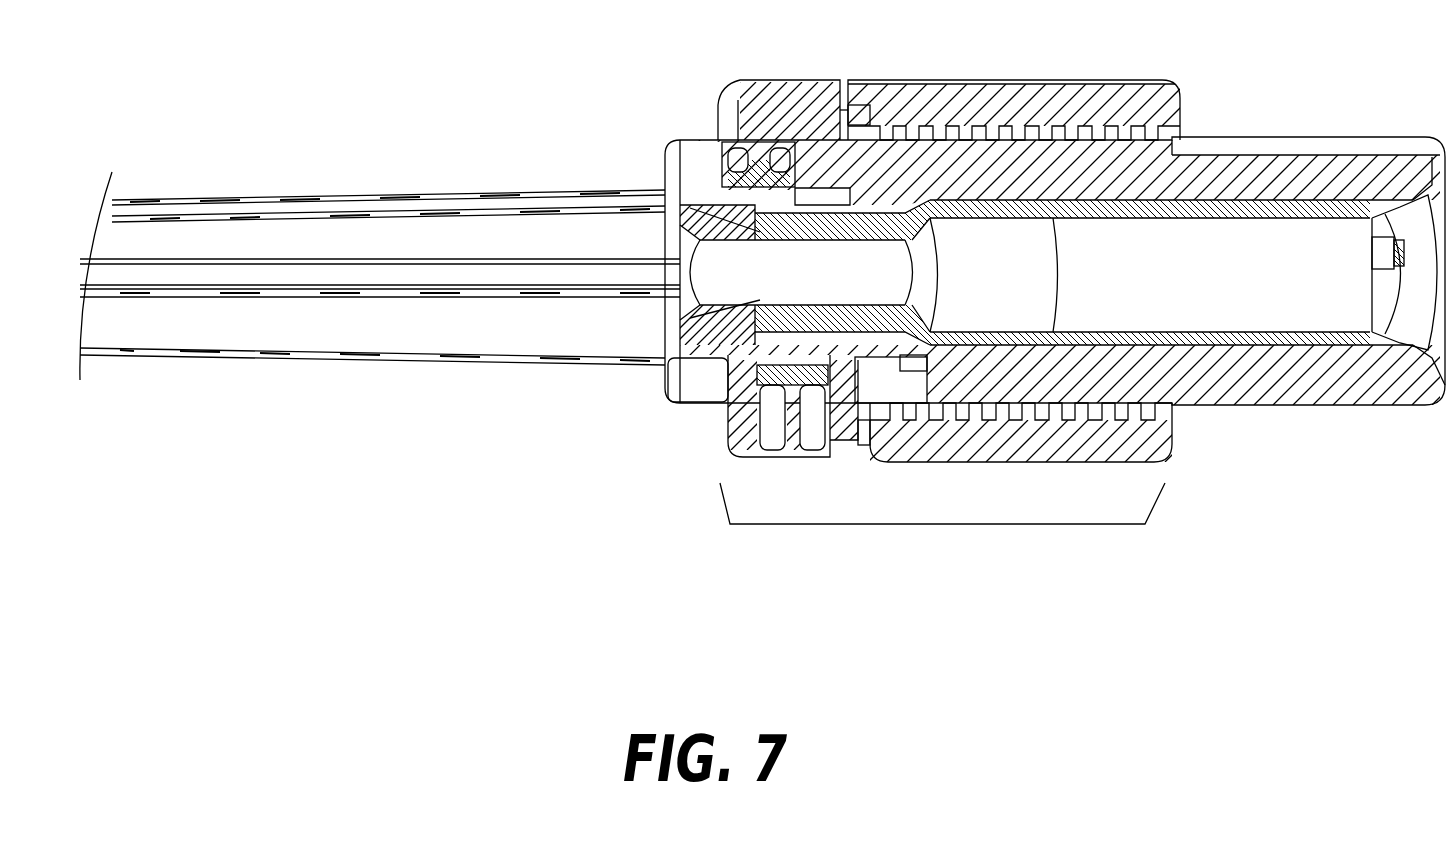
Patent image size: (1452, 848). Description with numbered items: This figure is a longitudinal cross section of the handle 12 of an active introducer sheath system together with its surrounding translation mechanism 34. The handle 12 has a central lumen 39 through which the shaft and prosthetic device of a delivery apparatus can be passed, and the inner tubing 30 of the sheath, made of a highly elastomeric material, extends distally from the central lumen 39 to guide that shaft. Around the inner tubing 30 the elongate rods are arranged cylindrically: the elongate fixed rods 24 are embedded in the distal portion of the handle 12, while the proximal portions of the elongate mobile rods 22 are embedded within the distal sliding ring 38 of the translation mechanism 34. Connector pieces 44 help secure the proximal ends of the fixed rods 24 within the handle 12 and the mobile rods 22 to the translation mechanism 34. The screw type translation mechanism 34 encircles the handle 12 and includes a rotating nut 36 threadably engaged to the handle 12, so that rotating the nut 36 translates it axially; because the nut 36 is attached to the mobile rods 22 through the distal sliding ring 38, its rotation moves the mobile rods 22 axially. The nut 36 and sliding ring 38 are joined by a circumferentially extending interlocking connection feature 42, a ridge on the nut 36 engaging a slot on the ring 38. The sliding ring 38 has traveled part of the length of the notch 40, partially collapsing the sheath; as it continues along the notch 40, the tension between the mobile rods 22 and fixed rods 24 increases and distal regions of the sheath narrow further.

The handle 12 is at (890, 180).
The elongate mobile rods 22 is at (97, 358).
The elongate fixed rods 24 is at (144, 198).
The inner tubing 30 is at (380, 278).
The translation mechanism 34 is at (940, 524).
The rotating nut 36 is at (1130, 95).
The distal sliding ring 38 is at (788, 88).
The central lumen 39 is at (1248, 284).
The notch 40 is at (715, 398).
The interlocking connection feature 42 is at (876, 112).
The connector pieces 44 is at (730, 160).